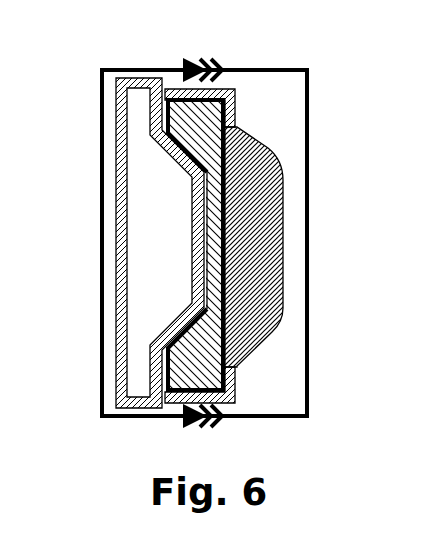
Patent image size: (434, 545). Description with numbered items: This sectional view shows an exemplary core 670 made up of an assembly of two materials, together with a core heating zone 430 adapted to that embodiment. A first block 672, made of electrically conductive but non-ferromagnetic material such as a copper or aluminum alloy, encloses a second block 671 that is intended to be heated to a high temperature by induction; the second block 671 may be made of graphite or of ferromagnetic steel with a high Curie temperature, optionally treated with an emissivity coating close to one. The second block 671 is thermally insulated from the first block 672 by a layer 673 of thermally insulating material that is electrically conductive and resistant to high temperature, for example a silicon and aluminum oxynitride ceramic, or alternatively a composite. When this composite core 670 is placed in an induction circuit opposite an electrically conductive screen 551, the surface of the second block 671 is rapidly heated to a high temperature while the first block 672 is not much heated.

The housing / cross-section assembly 430 is at (141, 50).
The electrically conductive screen 551 is at (118, 205).
The core 670 is at (229, 267).
The second block 671 is at (155, 343).
The first block 672 is at (285, 228).
The layer 673 is at (227, 317).